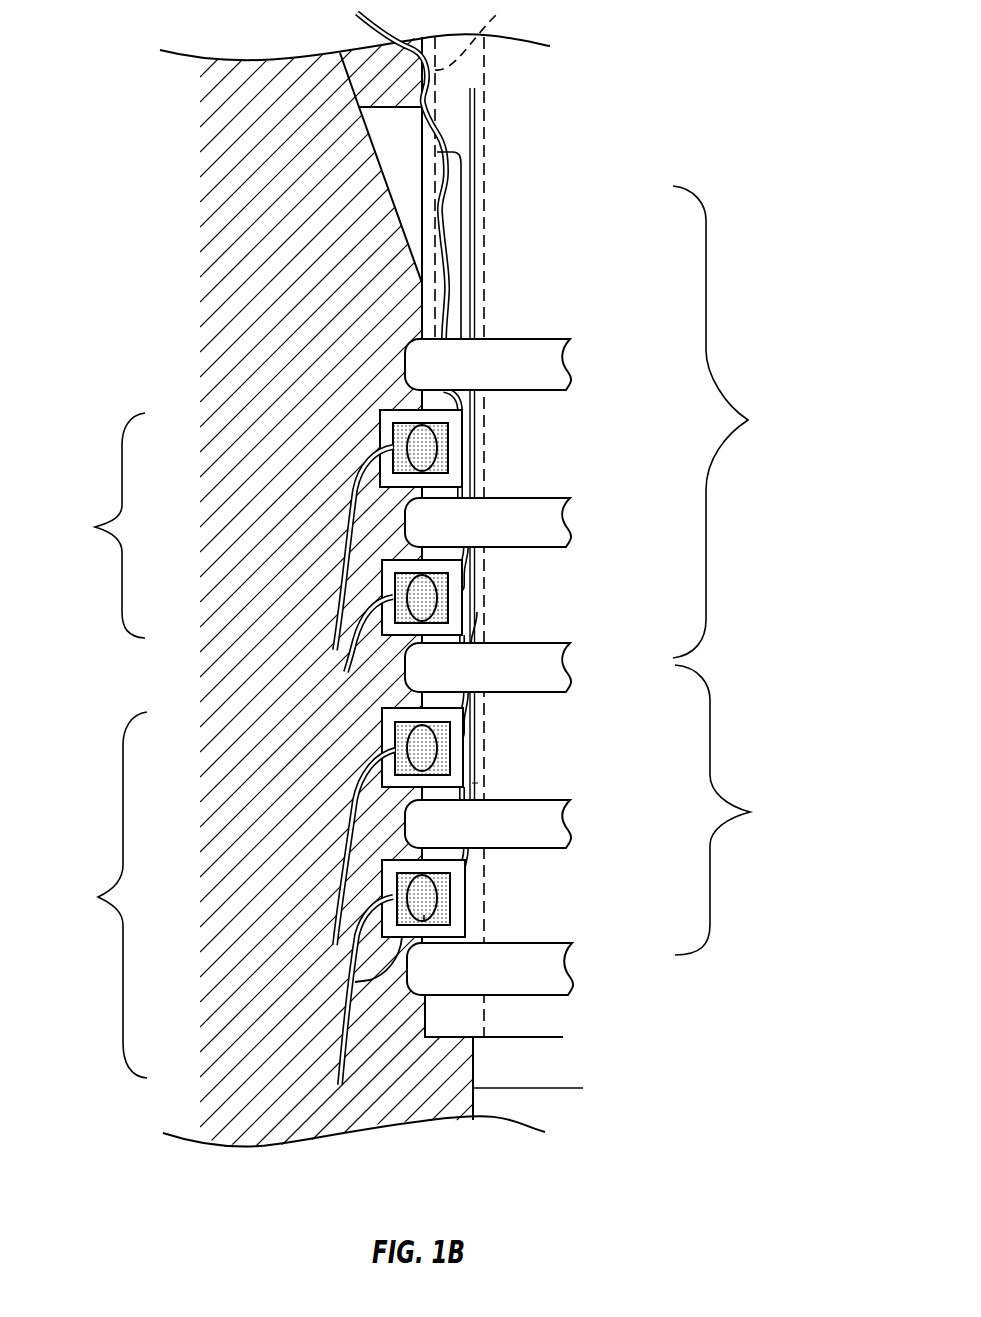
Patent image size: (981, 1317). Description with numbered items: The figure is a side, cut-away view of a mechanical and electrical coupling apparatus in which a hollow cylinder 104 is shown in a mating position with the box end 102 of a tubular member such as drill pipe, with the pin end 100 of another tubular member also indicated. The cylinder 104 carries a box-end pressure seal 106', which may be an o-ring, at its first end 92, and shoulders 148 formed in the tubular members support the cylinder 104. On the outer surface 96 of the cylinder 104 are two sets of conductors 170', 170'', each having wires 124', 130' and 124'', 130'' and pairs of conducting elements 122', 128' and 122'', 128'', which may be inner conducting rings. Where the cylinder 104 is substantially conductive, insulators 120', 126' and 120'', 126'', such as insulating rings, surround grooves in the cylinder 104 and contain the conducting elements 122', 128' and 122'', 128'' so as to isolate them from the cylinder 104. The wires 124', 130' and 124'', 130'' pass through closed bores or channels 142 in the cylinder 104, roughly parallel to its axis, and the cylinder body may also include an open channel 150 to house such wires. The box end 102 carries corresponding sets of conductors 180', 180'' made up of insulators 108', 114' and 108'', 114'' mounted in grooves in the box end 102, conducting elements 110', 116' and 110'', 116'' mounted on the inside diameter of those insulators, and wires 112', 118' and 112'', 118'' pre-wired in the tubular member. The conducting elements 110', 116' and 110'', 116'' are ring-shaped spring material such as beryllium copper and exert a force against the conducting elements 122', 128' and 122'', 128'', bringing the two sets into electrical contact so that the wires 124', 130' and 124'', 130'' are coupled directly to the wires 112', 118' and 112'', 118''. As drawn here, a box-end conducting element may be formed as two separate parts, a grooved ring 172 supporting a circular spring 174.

The first end 92 is at (538, 1037).
The outer surface 96 is at (422, 320).
The pin end 100 is at (402, 83).
The box end 102 is at (385, 186).
The cylinder 104 is at (425, 1047).
The box-end pressure seal 106' is at (532, 657).
The insulator 108' is at (386, 425).
The insulator 108'' is at (388, 728).
The conducting element 110' is at (379, 438).
The conducting element 110'' is at (377, 738).
The wire 112' is at (327, 548).
The wire 112'' is at (327, 847).
The insulator 114' is at (371, 584).
The insulator 114'' is at (371, 884).
The conducting element 116' is at (360, 596).
The conducting element 116'' is at (360, 897).
The wire 118' is at (327, 634).
The wire 118'' is at (322, 991).
The insulator 120' is at (498, 444).
The insulator 120'' is at (505, 746).
The conducting element 122' is at (480, 458).
The conducting element 122'' is at (484, 747).
The wire 124' is at (494, 246).
The wire 124'' is at (516, 624).
The insulator 126' is at (500, 595).
The insulator 126'' is at (505, 871).
The conducting element 128' is at (480, 598).
The conducting element 128'' is at (484, 898).
The wire 130' is at (461, 176).
The wire 130'' is at (518, 769).
The bores or channels 142 is at (463, 197).
The shoulder 148 is at (503, 1078).
The open channel 150 is at (489, 37).
The set of conductors 170' is at (733, 422).
The set of conductors 170'' is at (740, 810).
The grooved ring 172 is at (350, 983).
The circular spring 174 is at (424, 915).
The set of conductors 180' is at (95, 525).
The set of conductors 180'' is at (95, 895).